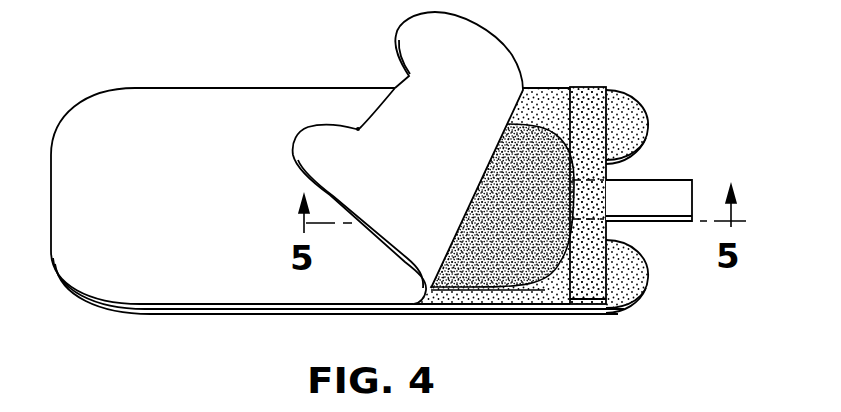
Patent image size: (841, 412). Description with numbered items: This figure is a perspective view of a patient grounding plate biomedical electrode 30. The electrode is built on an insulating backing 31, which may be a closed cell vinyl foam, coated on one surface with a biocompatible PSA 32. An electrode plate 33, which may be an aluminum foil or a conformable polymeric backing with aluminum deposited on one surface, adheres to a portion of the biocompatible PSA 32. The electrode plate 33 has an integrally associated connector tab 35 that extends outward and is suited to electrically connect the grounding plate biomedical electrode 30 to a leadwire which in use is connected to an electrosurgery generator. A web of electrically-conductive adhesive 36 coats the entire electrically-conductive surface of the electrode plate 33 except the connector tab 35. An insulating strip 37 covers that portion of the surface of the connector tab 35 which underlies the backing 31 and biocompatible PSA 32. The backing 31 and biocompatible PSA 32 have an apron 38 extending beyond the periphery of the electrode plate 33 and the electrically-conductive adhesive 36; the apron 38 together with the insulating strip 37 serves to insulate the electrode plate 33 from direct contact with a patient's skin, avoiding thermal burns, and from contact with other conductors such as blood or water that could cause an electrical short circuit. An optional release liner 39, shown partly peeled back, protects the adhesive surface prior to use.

The grounding plate biomedical electrode 30 is at (229, 88).
The insulating backing 31 is at (473, 307).
The biocompatible PSA 32 is at (512, 298).
The electrode plate 33 is at (533, 120).
The connector tab 35 is at (672, 184).
The electrically-conductive adhesive 36 is at (534, 278).
The insulating strip 37 is at (598, 284).
The apron 38 is at (445, 300).
The release liner 39 is at (407, 30).